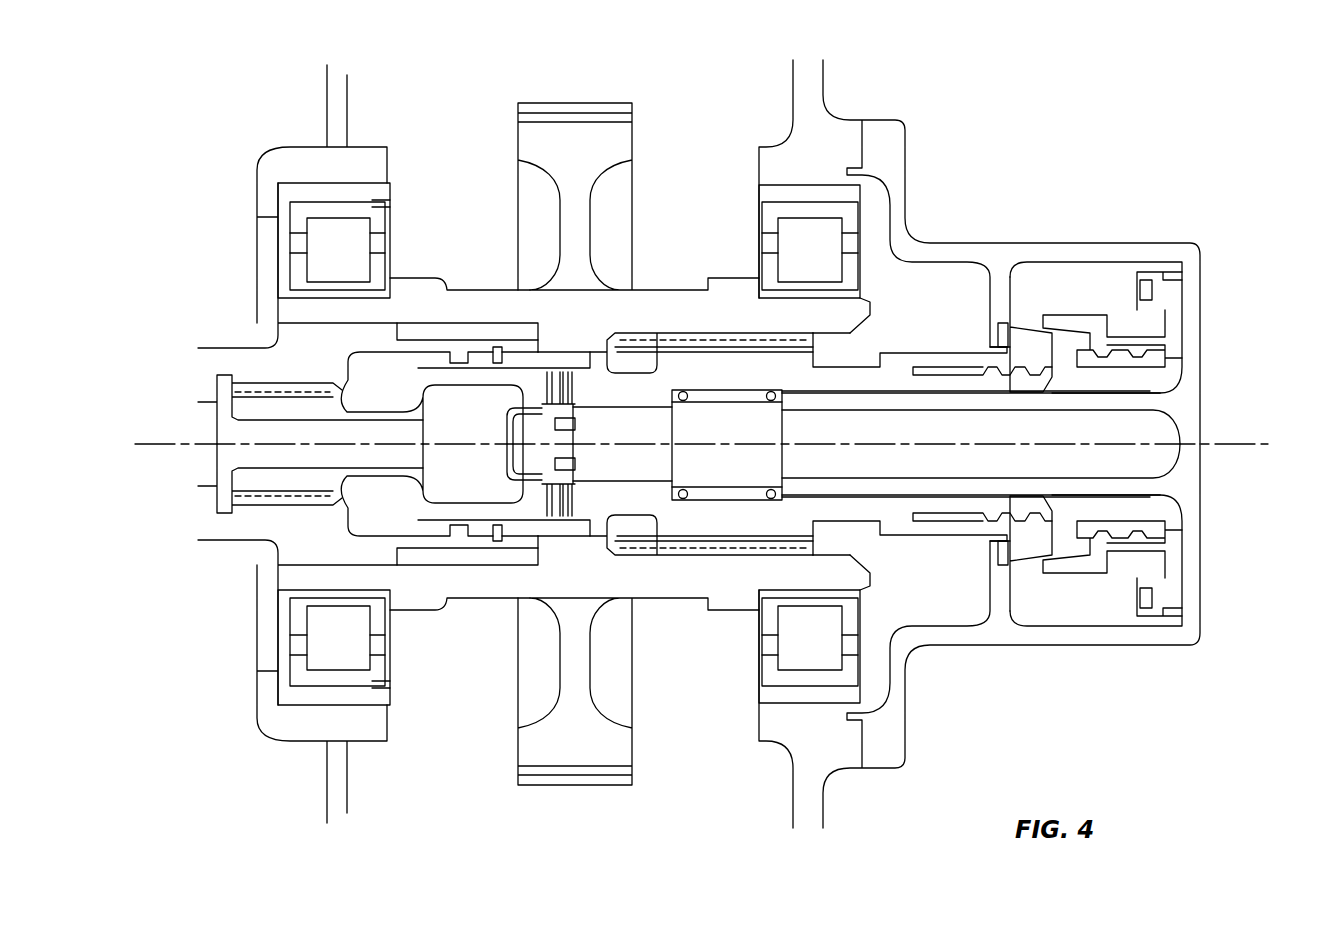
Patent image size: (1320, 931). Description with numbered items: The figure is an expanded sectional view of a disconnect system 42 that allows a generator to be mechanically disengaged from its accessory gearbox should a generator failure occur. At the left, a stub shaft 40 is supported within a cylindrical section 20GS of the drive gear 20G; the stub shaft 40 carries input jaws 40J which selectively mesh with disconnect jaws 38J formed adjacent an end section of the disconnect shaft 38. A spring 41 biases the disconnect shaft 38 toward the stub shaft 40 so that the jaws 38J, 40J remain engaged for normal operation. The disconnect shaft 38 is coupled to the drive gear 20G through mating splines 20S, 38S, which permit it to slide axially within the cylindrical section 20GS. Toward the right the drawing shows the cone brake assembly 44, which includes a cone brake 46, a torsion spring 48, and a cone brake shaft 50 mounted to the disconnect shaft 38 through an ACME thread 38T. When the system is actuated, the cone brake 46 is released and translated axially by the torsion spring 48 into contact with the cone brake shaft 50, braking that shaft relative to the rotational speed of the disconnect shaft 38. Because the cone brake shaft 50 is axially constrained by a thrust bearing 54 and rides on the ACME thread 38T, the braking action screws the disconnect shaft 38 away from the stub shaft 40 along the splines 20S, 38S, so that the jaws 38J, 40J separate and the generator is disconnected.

The drive gear 20G is at (658, 118).
The cylindrical section 20GS is at (492, 302).
The splines 20S is at (652, 336).
The stub shaft 40 is at (426, 372).
The input jaws 40J is at (543, 510).
The disconnect jaws 38J is at (562, 513).
The disconnect shaft 38 is at (885, 353).
The splines 38S is at (813, 337).
The ACME thread 38T is at (1008, 376).
The spring 41 is at (715, 495).
The disconnect system 42 is at (1120, 126).
The cone brake assembly 44 is at (1081, 266).
The cone brake 46 is at (1085, 320).
The torsion spring 48 is at (1153, 325).
The cone brake shaft 50 is at (1027, 340).
The thrust bearing 54 is at (1003, 323).